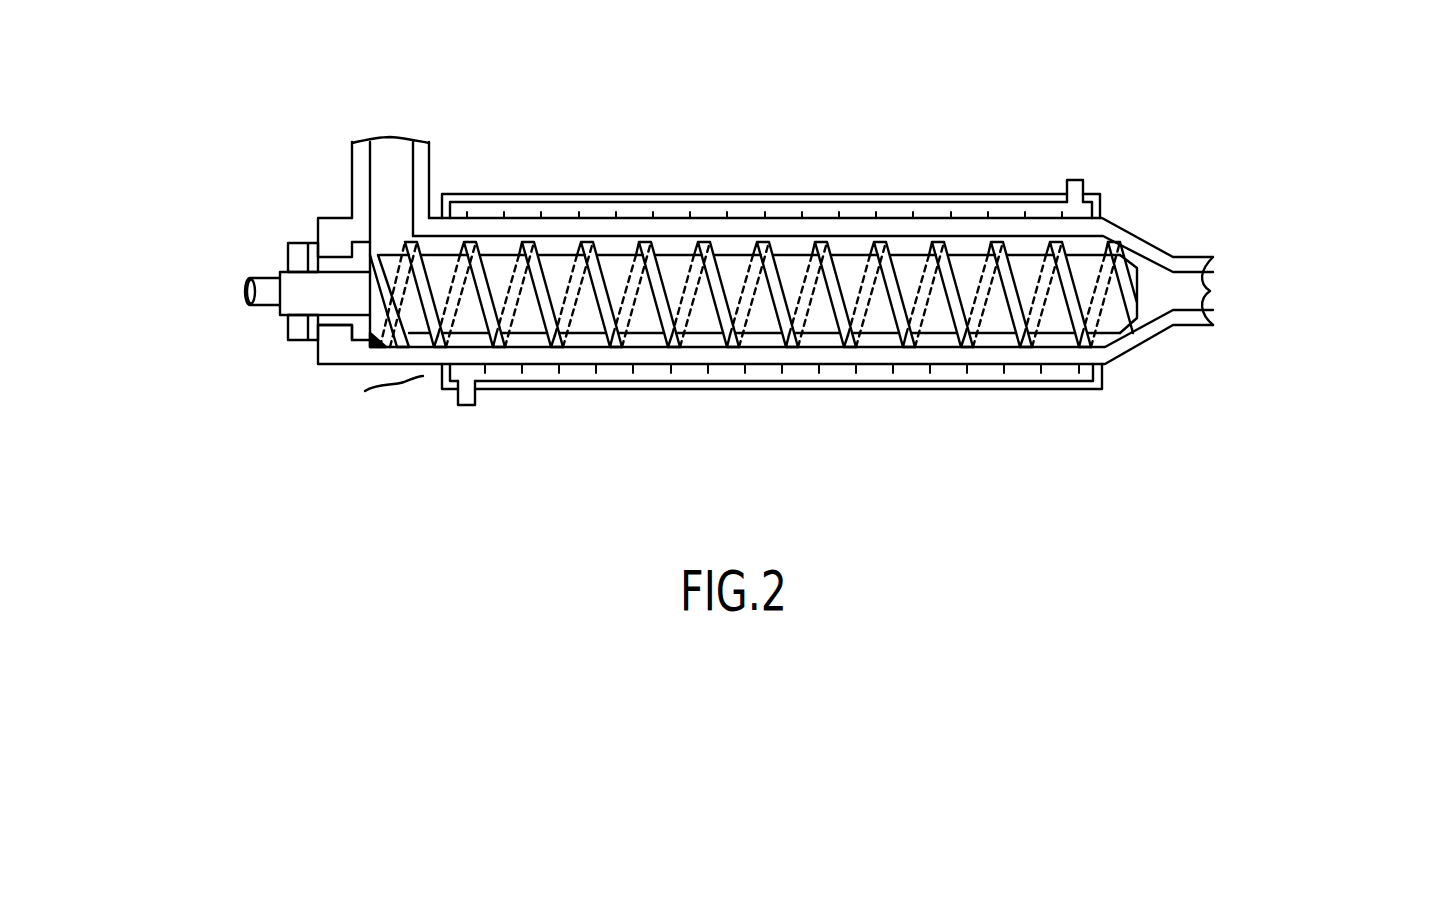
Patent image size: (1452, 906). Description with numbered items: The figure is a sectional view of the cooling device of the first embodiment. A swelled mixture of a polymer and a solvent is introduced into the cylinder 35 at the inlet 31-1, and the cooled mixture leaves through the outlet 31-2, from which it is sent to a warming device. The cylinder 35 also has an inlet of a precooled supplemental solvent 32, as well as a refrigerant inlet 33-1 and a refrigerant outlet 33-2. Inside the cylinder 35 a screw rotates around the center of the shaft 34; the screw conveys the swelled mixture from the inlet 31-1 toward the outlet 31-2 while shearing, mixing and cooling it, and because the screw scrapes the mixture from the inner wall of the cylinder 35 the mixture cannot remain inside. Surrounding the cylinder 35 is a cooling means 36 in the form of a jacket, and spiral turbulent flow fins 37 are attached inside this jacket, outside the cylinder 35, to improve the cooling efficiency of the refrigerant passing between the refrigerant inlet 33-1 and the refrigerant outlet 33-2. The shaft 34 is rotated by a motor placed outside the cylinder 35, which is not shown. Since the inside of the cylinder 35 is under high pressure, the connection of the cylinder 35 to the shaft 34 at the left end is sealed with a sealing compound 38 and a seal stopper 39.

The inlet 31-1 is at (393, 110).
The outlet 31-2 is at (1218, 293).
The inlet of precooled supplemental solvent 32 is at (393, 411).
The refrigerant inlet 33-1 is at (1073, 147).
The refrigerant outlet 33-2 is at (467, 413).
The shaft 34 is at (1072, 282).
The cylinder 35 is at (1140, 336).
The cooling means 36 is at (915, 372).
The spiral turbulent flow fins 37 is at (743, 368).
The sealing compound 38 is at (327, 330).
The seal stopper 39 is at (288, 326).